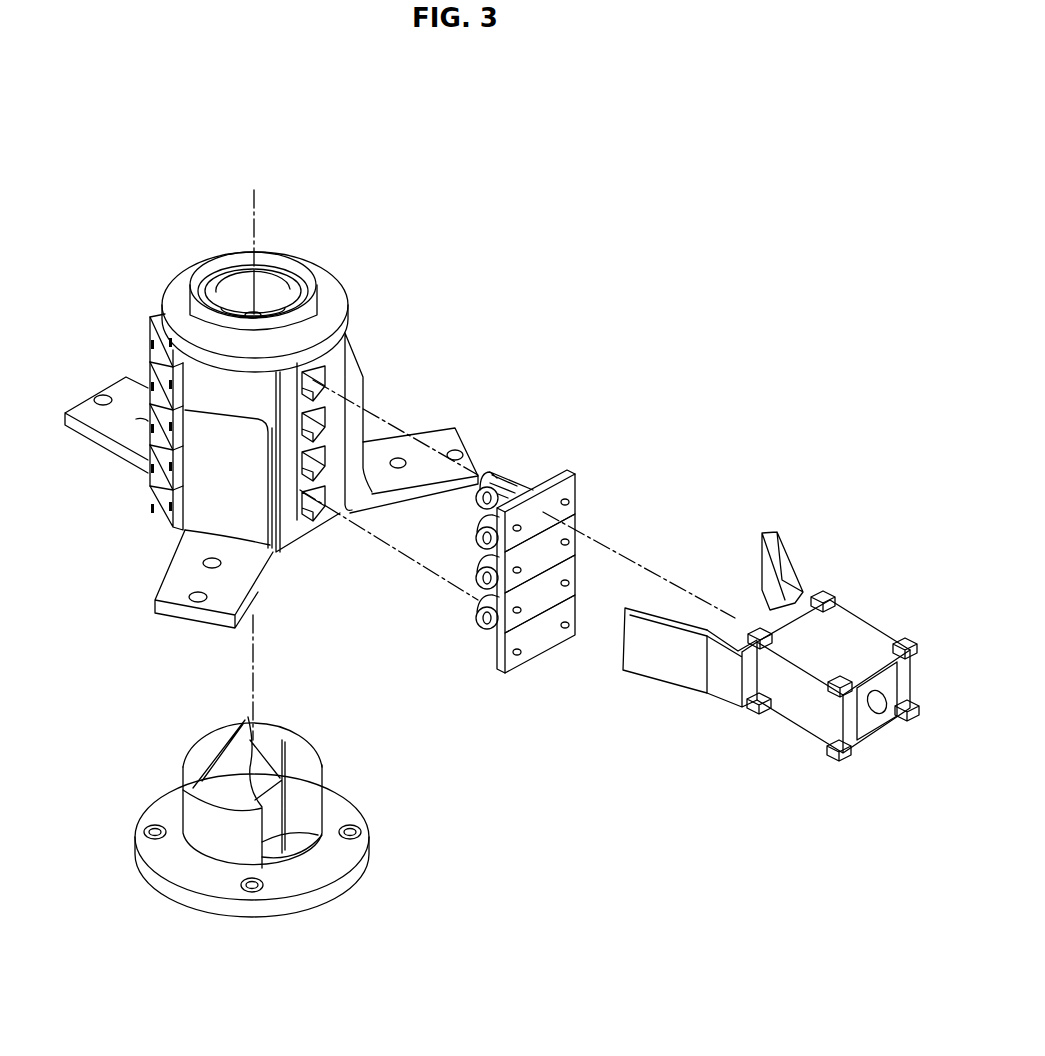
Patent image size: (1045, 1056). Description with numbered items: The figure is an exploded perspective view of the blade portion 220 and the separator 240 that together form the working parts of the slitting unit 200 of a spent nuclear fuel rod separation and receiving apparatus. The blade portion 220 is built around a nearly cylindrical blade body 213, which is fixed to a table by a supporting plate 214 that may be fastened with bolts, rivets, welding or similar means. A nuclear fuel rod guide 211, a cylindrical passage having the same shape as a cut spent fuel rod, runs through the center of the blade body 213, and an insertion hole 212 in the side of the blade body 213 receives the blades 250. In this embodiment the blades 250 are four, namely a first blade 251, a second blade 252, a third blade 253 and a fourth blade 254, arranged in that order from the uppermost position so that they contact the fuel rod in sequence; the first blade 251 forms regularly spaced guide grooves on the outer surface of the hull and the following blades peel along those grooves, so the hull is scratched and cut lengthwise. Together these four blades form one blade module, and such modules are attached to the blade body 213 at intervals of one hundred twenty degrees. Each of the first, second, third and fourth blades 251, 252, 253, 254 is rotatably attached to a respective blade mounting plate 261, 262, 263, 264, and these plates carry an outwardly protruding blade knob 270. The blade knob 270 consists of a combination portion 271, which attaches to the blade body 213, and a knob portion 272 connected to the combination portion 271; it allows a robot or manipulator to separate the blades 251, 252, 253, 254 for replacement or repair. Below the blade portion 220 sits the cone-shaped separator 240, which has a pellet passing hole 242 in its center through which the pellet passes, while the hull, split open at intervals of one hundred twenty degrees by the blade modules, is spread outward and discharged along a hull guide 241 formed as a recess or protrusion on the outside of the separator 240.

The slitting unit 200 is at (823, 156).
The nuclear fuel rod guide 211 is at (261, 289).
The insertion hole 212 is at (320, 423).
The blade body 213 is at (202, 384).
The supporting plate 214 is at (178, 572).
The blade portion 220 is at (352, 293).
The separator 240 is at (213, 730).
The hull guide 241 is at (205, 766).
The pellet passing hole 242 is at (258, 736).
The blades 250 is at (557, 463).
The first blade 251 is at (487, 470).
The second blade 252 is at (478, 520).
The third blade 253 is at (478, 562).
The fourth blade 254 is at (478, 604).
The blade mounting plate 261 is at (548, 502).
The blade mounting plate 262 is at (552, 546).
The blade mounting plate 263 is at (552, 588).
The blade mounting plate 264 is at (540, 650).
The blade knob 270 is at (758, 721).
The combination portion 271 is at (783, 545).
The knob portion 272 is at (858, 640).